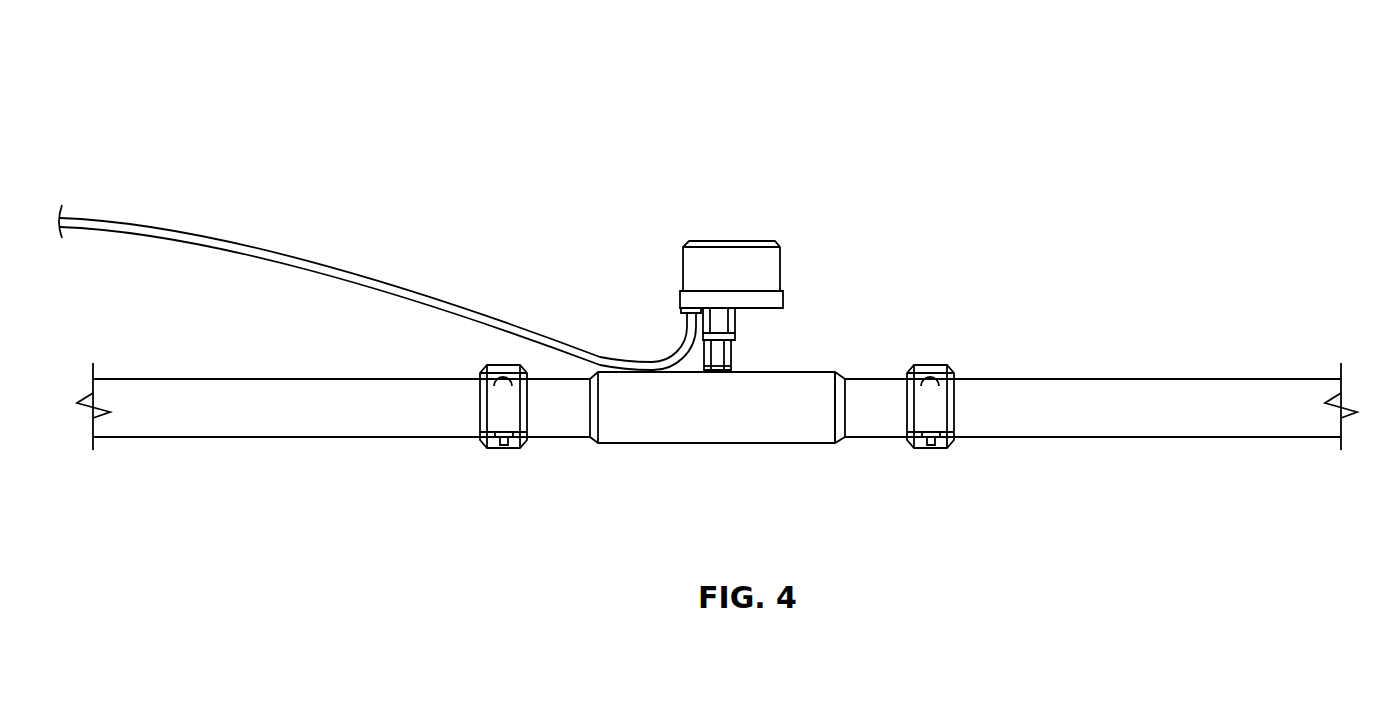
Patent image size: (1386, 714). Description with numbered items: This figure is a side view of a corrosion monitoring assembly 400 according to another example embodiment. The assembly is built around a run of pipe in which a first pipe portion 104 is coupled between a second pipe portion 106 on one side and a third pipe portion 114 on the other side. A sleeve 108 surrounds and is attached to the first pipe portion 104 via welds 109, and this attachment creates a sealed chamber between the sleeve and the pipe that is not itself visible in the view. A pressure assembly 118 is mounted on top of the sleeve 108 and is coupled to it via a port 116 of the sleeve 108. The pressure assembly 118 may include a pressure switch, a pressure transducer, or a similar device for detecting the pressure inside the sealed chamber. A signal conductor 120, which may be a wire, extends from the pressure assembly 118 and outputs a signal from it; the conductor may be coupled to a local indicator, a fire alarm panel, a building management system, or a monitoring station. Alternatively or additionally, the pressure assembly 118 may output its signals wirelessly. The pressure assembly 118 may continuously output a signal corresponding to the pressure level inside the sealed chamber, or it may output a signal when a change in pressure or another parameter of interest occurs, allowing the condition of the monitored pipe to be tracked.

The corrosion monitoring assembly 400 is at (1027, 67).
The first pipe portion 104 is at (893, 378).
The second pipe portion 106 is at (342, 423).
The sleeve 108 is at (655, 423).
The welds 109 is at (840, 433).
The third pipe portion 114 is at (1092, 423).
The port 116 is at (740, 365).
The pressure assembly 118 is at (766, 240).
The signal conductor 120 is at (286, 252).